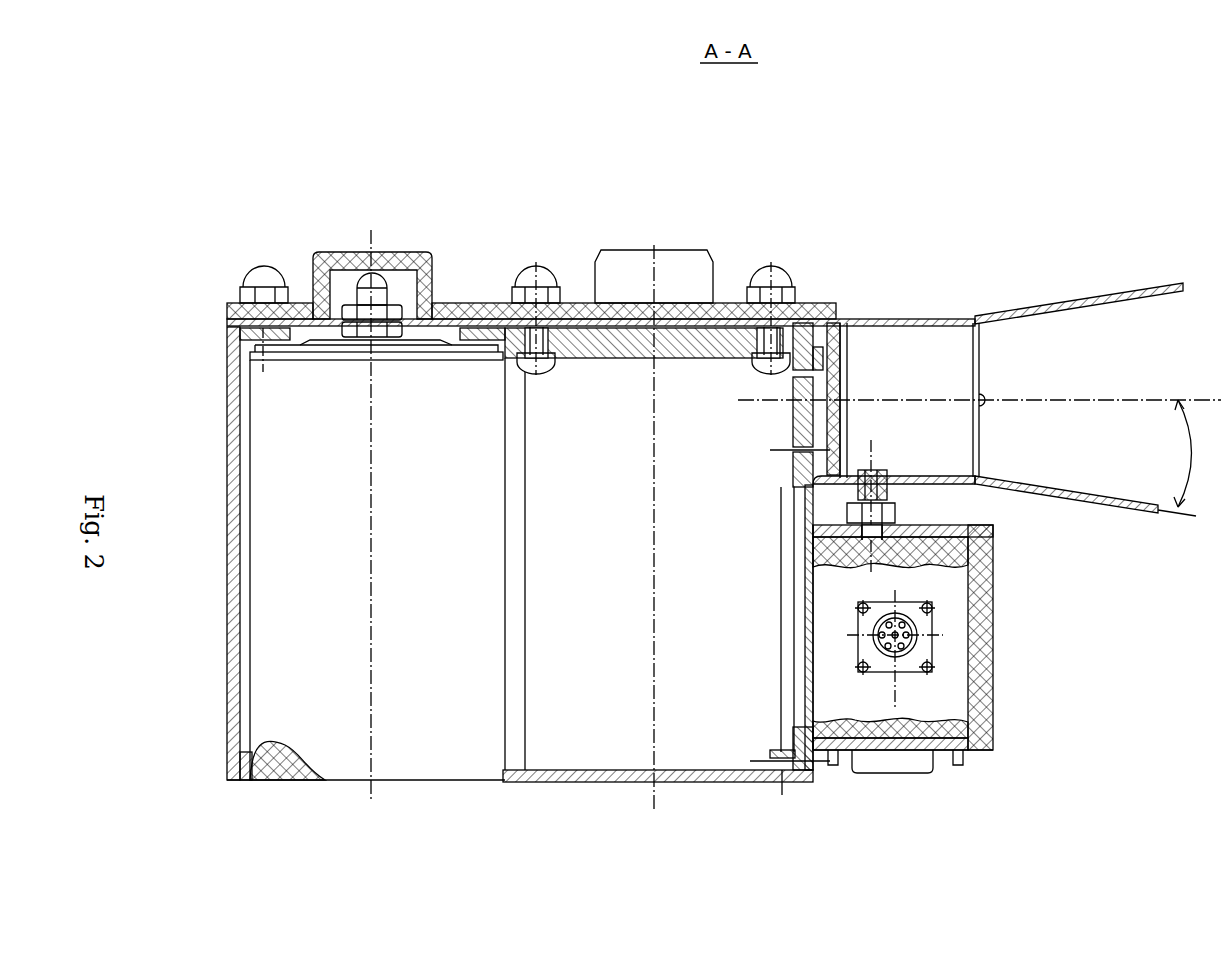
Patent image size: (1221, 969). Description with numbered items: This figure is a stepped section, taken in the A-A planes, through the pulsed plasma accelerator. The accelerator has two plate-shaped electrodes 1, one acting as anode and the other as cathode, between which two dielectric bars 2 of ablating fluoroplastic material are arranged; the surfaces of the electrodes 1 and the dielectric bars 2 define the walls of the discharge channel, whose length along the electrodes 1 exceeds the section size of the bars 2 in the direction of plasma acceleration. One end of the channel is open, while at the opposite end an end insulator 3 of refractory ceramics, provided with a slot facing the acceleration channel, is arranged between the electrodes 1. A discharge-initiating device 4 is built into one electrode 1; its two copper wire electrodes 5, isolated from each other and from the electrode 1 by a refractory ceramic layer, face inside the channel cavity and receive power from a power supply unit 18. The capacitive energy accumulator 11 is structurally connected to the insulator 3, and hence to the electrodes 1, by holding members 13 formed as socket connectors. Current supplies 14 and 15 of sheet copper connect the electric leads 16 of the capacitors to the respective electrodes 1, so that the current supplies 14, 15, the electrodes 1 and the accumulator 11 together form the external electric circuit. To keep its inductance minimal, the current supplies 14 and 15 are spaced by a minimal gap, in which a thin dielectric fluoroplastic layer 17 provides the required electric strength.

The electrodes 1 is at (1195, 182).
The dielectric bars 2 is at (1118, 182).
The end insulator 3 is at (998, 182).
The discharge-initiating device 4 is at (905, 550).
The electrodes of the discharge-initiating device 5 is at (885, 478).
The capacitive energy accumulator 11 is at (805, 182).
The holding members 13 is at (660, 897).
The current supply 14 is at (925, 182).
The current supply 15 is at (510, 897).
The electric leads of the capacitors 16 is at (500, 184).
The dielectric fluoroplastic layer 17 is at (722, 182).
The power supply unit 18 is at (867, 692).